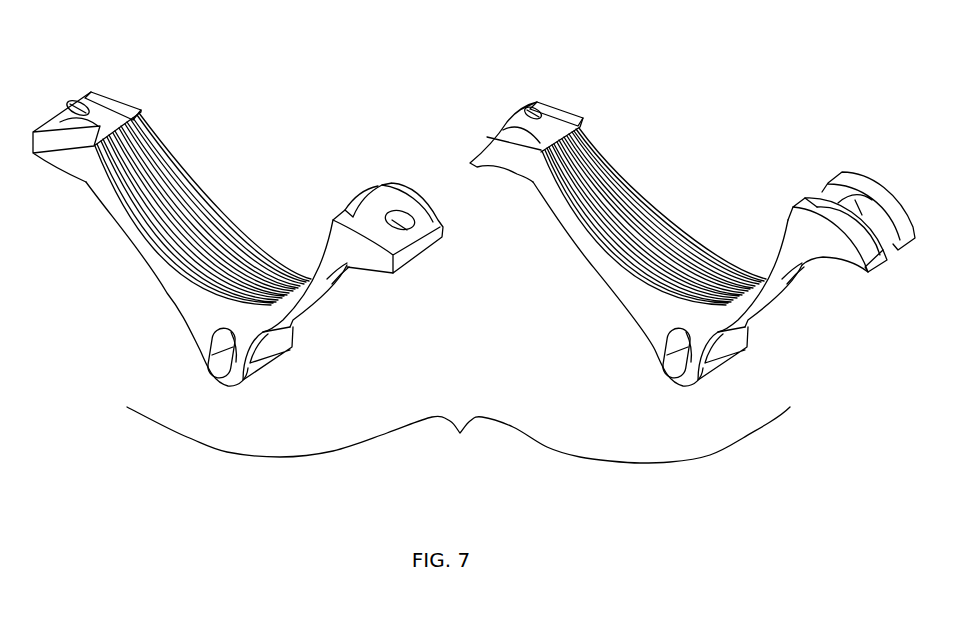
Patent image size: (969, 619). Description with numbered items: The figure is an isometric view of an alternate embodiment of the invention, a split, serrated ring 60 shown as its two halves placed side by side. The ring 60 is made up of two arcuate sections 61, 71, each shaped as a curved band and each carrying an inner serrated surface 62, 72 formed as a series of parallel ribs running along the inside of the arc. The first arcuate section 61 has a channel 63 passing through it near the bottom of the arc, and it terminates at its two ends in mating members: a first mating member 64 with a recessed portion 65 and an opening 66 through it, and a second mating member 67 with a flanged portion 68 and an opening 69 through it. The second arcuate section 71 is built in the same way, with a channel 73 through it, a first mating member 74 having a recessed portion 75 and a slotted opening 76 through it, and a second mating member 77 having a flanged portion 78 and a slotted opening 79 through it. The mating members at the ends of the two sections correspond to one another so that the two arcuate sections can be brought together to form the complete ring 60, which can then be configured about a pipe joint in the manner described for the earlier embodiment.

The split serrated ring 60 is at (458, 435).
The first arcuate section 61 is at (251, 120).
The inner serrated surface 62 is at (163, 193).
The channel 63 is at (222, 363).
The first mating member 64 is at (375, 250).
The recessed portion 65 is at (367, 207).
The opening 66 is at (415, 208).
The second mating member 67 is at (66, 167).
The flanged portion 68 is at (108, 110).
The opening 69 is at (80, 98).
The second arcuate section 71 is at (715, 145).
The inner serrated surface 72 is at (677, 270).
The channel 73 is at (678, 341).
The first mating member 74 is at (833, 235).
The recessed portion 75 is at (822, 193).
The slotted opening 76 is at (873, 213).
The second mating member 77 is at (500, 153).
The flanged portion 78 is at (558, 113).
The slotted opening 79 is at (520, 115).